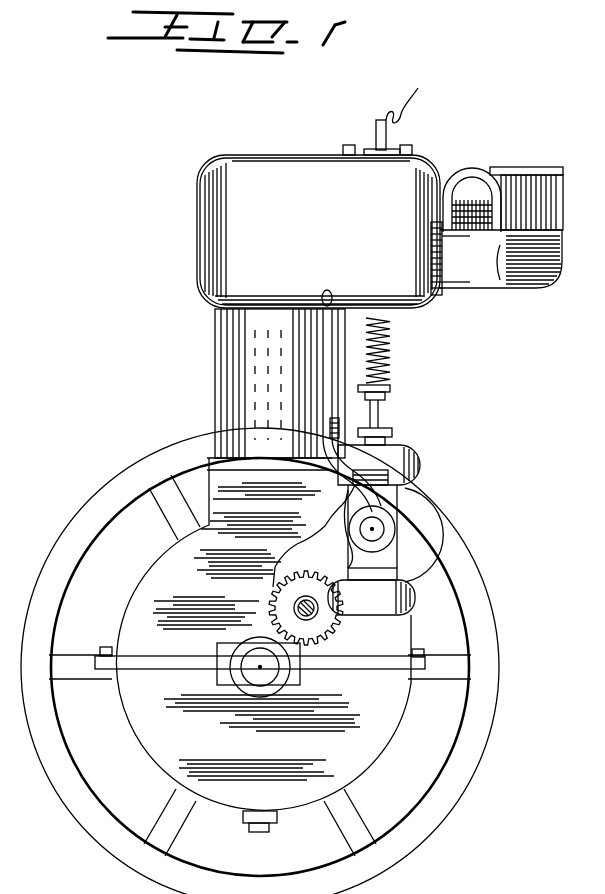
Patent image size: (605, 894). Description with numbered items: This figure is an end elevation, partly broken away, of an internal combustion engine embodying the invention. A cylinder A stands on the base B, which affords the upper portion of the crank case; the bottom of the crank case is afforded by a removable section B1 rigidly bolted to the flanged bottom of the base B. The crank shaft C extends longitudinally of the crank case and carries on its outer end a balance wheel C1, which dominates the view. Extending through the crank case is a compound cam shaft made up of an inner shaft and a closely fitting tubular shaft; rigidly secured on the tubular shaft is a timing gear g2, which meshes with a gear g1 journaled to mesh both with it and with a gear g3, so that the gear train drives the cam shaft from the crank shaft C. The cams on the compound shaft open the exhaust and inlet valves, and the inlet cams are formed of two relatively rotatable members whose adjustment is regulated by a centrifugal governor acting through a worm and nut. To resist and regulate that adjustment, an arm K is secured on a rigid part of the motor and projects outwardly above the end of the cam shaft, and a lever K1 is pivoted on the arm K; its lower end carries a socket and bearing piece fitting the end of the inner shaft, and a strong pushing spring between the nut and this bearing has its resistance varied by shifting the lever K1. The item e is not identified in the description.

The cylinder A is at (222, 215).
The ignition wire e is at (402, 105).
The arm K is at (346, 425).
The lever K1 is at (362, 472).
The timing gear g2 is at (340, 507).
The gear g1 is at (338, 621).
The gear g3 is at (222, 637).
The base B is at (486, 623).
The removable section B1 is at (385, 707).
The crank shaft C is at (250, 695).
The balance wheel C1 is at (92, 810).